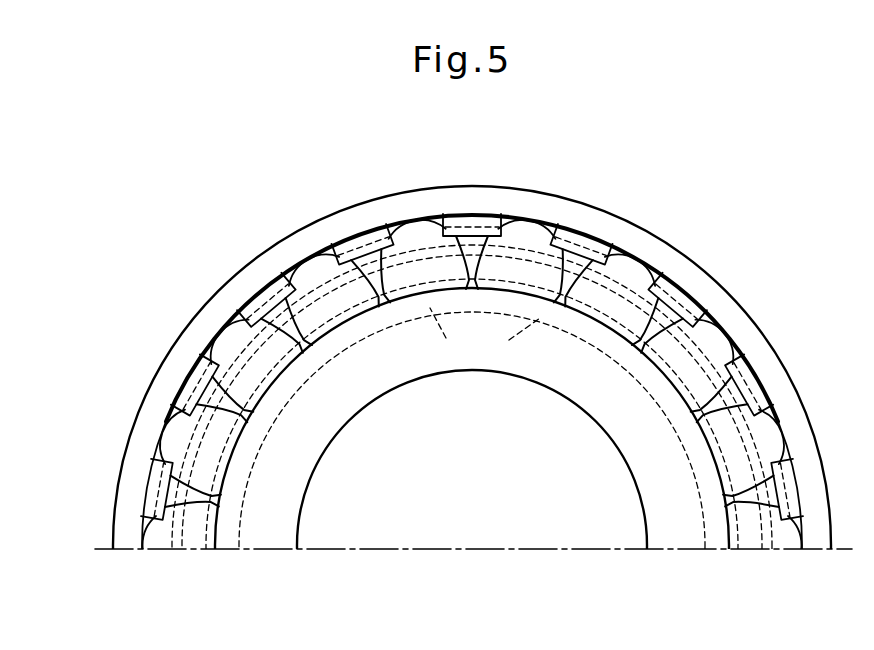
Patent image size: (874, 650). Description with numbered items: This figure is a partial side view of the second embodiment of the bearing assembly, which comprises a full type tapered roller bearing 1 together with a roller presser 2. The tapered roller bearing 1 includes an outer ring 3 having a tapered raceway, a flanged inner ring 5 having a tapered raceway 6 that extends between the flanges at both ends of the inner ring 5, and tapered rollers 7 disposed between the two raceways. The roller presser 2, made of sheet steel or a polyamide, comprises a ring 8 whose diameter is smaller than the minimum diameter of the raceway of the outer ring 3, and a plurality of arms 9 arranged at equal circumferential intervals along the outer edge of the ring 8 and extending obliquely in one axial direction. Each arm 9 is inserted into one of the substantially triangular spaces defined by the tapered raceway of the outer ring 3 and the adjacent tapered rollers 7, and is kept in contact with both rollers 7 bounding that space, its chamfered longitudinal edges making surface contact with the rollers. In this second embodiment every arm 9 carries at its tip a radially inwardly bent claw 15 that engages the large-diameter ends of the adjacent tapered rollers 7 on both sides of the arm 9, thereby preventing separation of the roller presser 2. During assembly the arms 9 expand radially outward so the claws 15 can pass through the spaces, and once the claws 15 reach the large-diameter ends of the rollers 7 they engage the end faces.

The tapered roller bearing 1 is at (752, 318).
The roller presser 2 is at (264, 286).
The outer ring 3 is at (314, 234).
The flanged inner ring 5 is at (661, 535).
The tapered raceway 6 is at (509, 340).
The tapered rollers 7 is at (481, 247).
The ring 8 is at (446, 338).
The arms 9 is at (426, 250).
The claw 15 is at (575, 232).